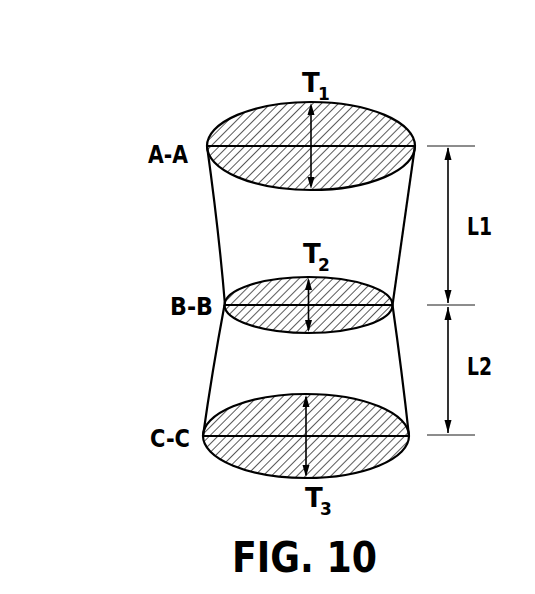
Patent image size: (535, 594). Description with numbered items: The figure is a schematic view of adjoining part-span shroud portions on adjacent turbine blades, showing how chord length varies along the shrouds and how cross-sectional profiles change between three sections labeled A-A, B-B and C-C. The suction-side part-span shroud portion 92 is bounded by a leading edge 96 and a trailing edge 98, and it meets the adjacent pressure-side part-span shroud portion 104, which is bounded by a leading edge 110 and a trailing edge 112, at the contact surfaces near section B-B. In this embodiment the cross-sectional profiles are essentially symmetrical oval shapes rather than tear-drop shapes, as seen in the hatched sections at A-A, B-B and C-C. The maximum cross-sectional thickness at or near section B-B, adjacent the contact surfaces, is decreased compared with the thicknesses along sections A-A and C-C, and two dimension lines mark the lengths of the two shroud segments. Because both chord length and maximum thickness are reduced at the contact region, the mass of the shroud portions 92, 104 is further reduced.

The part-span shroud portion 104 is at (93, 130).
The part-span shroud portion 92 is at (215, 482).
The leading edge 110 is at (214, 218).
The trailing edge 112 is at (405, 213).
The leading edge 96 is at (214, 375).
The trailing edge 98 is at (402, 355).